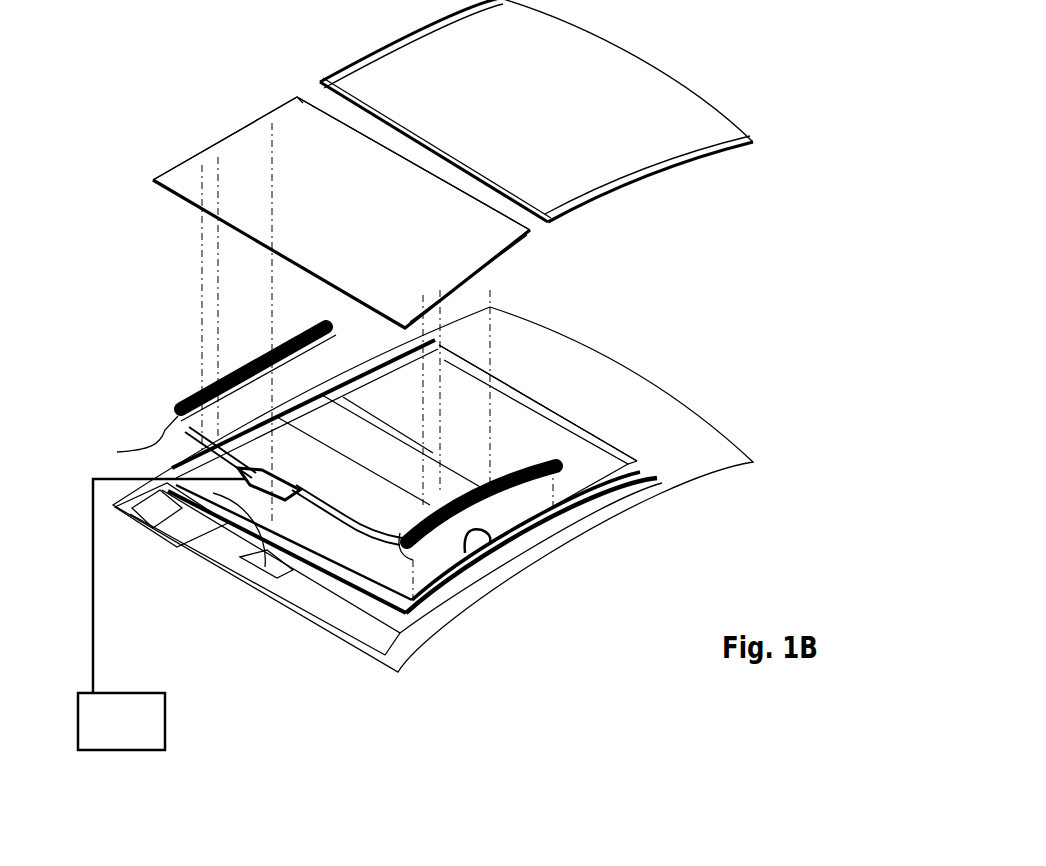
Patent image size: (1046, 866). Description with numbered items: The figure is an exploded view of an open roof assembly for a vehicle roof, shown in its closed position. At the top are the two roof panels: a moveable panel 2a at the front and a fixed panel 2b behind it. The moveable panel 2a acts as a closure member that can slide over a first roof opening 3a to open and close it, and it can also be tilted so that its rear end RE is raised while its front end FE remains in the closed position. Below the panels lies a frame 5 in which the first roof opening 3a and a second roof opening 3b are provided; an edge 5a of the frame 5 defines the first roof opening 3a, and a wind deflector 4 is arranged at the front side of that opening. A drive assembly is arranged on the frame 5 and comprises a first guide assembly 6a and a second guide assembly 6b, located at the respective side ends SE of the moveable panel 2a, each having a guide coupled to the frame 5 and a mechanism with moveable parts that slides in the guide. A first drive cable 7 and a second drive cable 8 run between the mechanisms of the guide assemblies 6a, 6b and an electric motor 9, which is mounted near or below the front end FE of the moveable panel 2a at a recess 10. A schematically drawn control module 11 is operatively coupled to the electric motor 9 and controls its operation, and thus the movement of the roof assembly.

The moveable panel 2a is at (364, 220).
The fixed panel 2b is at (560, 120).
The first roof opening 3a is at (354, 492).
The second roof opening 3b is at (535, 450).
The wind deflector 4 is at (160, 497).
The frame 5 is at (480, 606).
The edge 5a is at (472, 540).
The first guide assembly 6a is at (498, 513).
The second guide assembly 6b is at (176, 374).
The first drive cable 7 is at (282, 602).
The second drive cable 8 is at (197, 458).
The electric motor 9 is at (180, 538).
The recess 10 is at (237, 580).
The control module 11 is at (134, 735).
The rear end RE is at (350, 128).
The side end SE is at (230, 134).
The front end FE is at (245, 251).